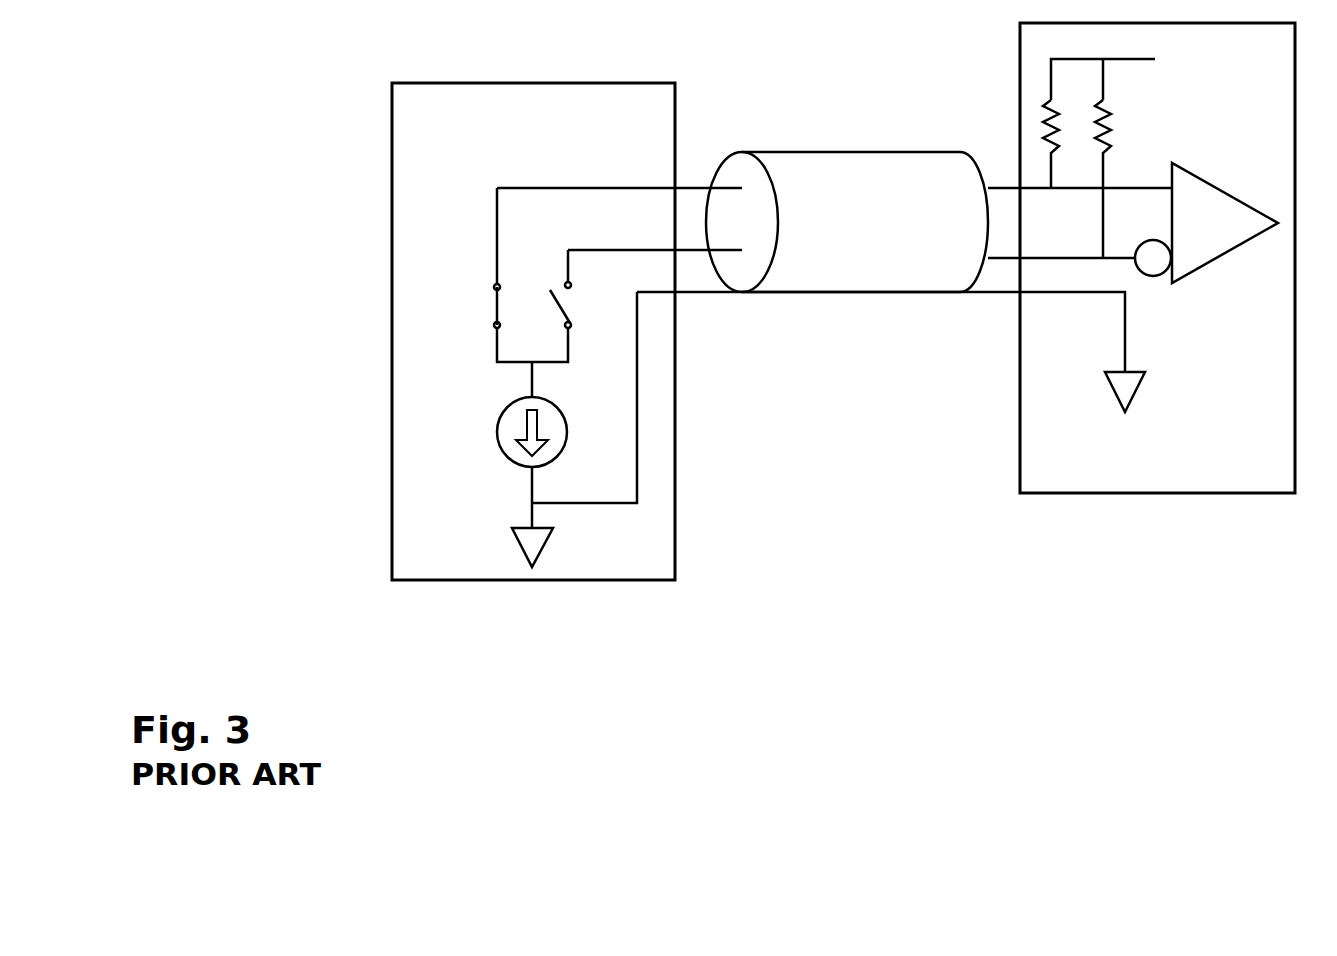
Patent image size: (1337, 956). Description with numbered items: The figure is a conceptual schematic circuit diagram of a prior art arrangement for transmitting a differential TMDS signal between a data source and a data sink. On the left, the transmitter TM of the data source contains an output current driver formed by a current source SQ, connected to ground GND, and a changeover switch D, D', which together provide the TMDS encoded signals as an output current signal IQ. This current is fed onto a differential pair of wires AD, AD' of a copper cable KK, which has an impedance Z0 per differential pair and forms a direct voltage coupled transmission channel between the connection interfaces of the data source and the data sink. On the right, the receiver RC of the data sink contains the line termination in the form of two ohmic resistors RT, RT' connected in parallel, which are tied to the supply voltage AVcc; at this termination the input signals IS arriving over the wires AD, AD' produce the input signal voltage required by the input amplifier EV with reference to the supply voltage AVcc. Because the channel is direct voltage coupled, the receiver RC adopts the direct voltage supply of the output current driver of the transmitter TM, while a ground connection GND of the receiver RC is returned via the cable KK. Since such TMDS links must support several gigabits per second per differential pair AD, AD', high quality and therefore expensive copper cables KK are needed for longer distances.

The transmitter TM is at (533, 331).
The receiver RC is at (1157, 258).
The copper cable KK is at (857, 152).
The impedance Z0 is at (861, 220).
The wire of differential pair AD is at (834, 150).
The wire of differential pair AD' is at (851, 303).
The output current signals IQ is at (675, 188).
The input signals at receiver IS is at (1020, 188).
The changeover switch D is at (497, 275).
The changeover switch D' is at (571, 306).
The current source SQ is at (545, 410).
The ground GND is at (828, 429).
The supply voltage AVcc is at (1108, 70).
The ohmic resistor RT is at (1060, 144).
The ohmic resistor RT' is at (1113, 179).
The input amplifier EV is at (1206, 223).